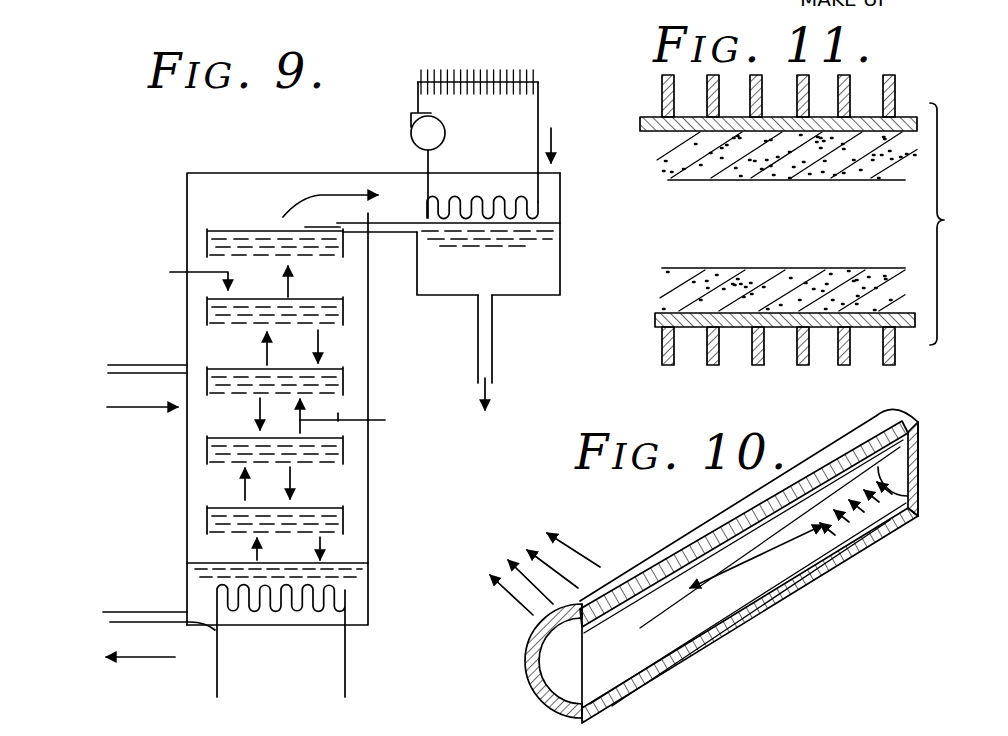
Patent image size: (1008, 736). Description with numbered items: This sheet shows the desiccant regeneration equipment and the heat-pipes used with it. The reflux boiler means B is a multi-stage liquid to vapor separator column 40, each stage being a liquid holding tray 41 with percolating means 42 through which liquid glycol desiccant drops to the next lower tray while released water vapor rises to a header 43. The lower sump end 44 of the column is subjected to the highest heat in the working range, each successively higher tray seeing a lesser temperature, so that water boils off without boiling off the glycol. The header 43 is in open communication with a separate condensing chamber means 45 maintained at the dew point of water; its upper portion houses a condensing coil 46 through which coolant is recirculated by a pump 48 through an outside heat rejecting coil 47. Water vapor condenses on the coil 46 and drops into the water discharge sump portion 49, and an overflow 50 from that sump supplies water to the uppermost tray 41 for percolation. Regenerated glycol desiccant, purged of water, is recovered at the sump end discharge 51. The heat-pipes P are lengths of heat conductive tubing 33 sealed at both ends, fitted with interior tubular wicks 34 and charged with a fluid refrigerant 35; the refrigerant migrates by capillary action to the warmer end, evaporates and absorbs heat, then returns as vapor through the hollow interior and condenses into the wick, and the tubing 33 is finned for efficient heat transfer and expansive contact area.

In FIG. 11, the heat conductive tubing 33 is at (705, 98).
In FIG. 10, the heat conductive tubing 33 is at (707, 520).
In FIG. 11, the tubular wick 34 is at (745, 177).
In FIG. 10, the tubular wick 34 is at (545, 646).
In FIG. 11, the fluid refrigerant 35 is at (808, 233).
In FIG. 10, the fluid refrigerant 35 is at (610, 645).
In FIG. 9, the multi-stage liquid to vapor separator column 40 is at (188, 478).
In FIG. 9, the liquid holding tray 41 is at (207, 238).
In FIG. 9, the percolating means 42 is at (320, 256).
In FIG. 9, the header 43 is at (325, 186).
In FIG. 9, the lower sump end 44 is at (203, 587).
In FIG. 9, the condensing chamber means 45 is at (563, 258).
In FIG. 9, the condensing coil 46 is at (540, 205).
In FIG. 9, the outside heat rejecting coil 47 is at (486, 68).
In FIG. 9, the pump 48 is at (433, 118).
In FIG. 9, the water discharge sump portion 49 is at (543, 277).
In FIG. 9, the overflow 50 is at (393, 222).
In FIG. 9, the sump end discharge 51 is at (281, 641).
In FIG. 9, the reflux boiler means B is at (268, 155).
In FIG. 11, the heat-pipes P is at (730, 252).
In FIG. 10, the heat-pipes P is at (748, 631).